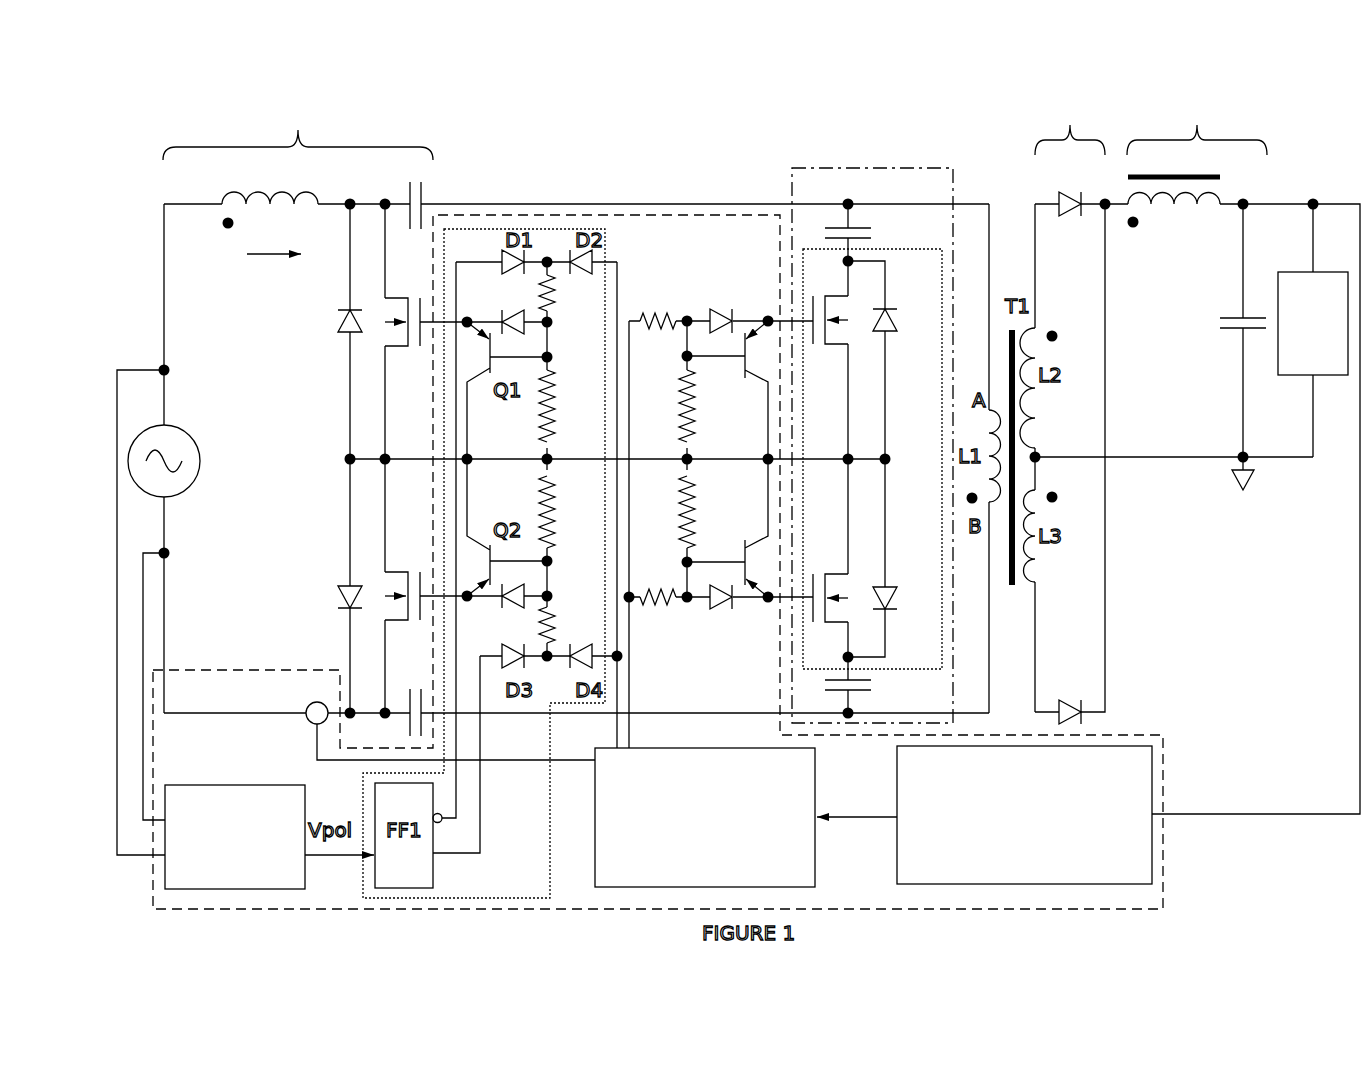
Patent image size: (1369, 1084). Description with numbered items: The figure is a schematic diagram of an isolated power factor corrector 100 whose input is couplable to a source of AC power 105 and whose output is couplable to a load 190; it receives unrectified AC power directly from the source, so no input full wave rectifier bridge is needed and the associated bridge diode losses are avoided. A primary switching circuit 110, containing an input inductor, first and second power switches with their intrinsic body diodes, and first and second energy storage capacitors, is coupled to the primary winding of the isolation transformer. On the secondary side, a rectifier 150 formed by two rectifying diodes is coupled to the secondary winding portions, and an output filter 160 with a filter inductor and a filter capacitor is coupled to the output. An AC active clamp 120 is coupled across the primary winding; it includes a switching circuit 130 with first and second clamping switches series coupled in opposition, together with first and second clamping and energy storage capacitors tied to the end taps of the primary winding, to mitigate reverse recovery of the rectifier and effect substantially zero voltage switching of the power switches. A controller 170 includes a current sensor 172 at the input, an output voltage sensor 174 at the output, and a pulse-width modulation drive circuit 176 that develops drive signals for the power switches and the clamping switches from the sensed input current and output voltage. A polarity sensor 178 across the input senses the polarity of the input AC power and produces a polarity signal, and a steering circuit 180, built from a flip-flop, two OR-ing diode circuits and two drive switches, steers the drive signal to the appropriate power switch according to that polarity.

The isolated power factor corrector 100 is at (185, 110).
The source of AC power 105 is at (174, 462).
The primary switching circuit 110 is at (298, 417).
The AC active clamp 120 is at (872, 445).
The switching circuit 130 is at (872, 459).
The rectifier 150 is at (1081, 410).
The output filter 160 is at (1243, 455).
The controller 170 is at (1167, 850).
The current sensor 172 is at (302, 728).
The output voltage sensor 174 is at (984, 815).
The drive circuit 176 is at (705, 817).
The polarity sensor 178 is at (235, 837).
The steering circuit 180 is at (484, 563).
The load 190 is at (1313, 330).